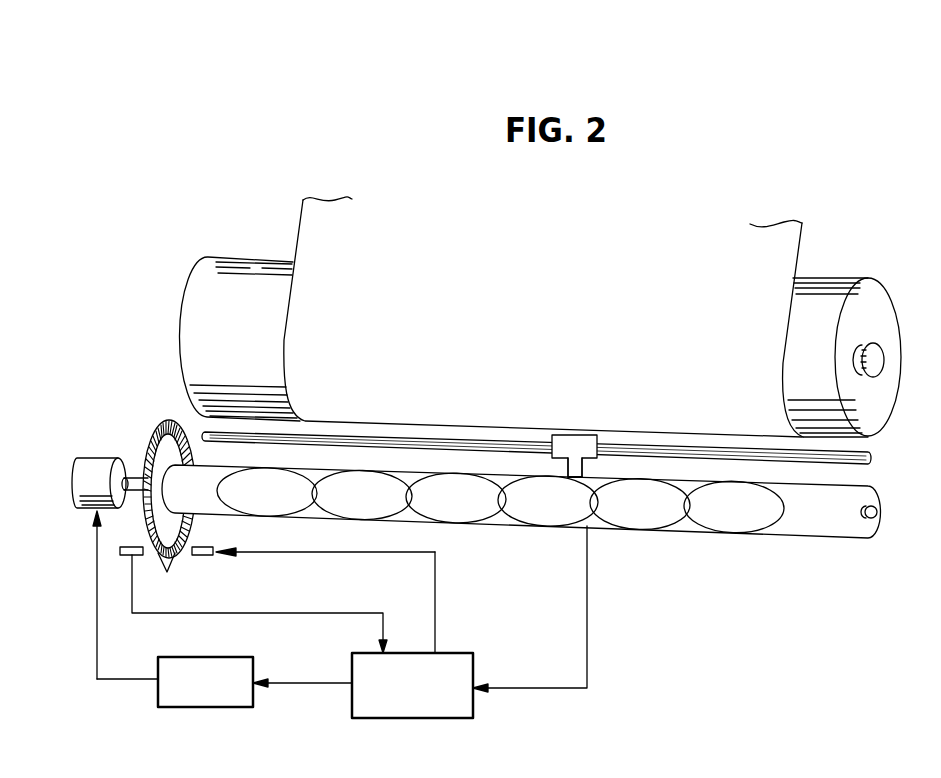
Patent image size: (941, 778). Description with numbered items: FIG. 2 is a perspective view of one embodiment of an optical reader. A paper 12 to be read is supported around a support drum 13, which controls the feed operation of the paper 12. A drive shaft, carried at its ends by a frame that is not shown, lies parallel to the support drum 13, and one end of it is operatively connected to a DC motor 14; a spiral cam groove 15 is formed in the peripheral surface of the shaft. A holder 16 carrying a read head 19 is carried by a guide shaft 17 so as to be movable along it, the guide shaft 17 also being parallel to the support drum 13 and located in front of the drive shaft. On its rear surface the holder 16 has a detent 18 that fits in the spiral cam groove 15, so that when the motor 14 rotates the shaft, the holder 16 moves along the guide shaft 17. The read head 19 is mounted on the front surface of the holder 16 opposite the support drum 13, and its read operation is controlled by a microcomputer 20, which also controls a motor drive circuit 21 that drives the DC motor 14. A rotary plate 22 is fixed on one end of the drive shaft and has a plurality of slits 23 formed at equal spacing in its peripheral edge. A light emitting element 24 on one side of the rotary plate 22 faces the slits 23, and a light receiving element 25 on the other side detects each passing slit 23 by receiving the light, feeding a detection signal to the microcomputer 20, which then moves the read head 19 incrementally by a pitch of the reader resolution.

The paper 12 is at (783, 243).
The support drum 13 is at (840, 278).
The DC motor 14 is at (100, 463).
The spiral cam groove 15 is at (410, 470).
The holder 16 is at (590, 480).
The guide shaft 17 is at (862, 450).
The detent 18 is at (570, 470).
The read head 19 is at (565, 435).
The microcomputer 20 is at (476, 662).
The motor drive circuit 21 is at (203, 708).
The rotary plate 22 is at (139, 430).
The slits 23 is at (167, 572).
The light emitting element 24 is at (208, 556).
The light receiving element 25 is at (129, 556).